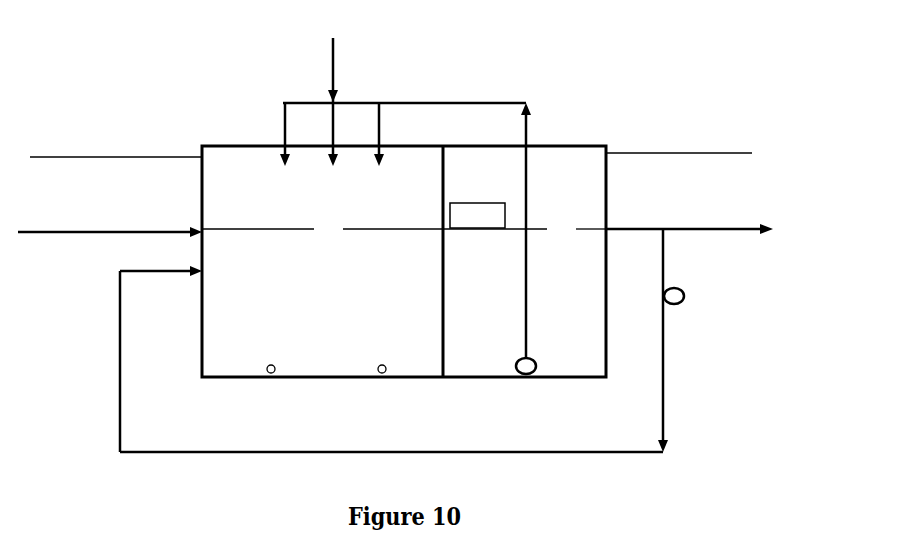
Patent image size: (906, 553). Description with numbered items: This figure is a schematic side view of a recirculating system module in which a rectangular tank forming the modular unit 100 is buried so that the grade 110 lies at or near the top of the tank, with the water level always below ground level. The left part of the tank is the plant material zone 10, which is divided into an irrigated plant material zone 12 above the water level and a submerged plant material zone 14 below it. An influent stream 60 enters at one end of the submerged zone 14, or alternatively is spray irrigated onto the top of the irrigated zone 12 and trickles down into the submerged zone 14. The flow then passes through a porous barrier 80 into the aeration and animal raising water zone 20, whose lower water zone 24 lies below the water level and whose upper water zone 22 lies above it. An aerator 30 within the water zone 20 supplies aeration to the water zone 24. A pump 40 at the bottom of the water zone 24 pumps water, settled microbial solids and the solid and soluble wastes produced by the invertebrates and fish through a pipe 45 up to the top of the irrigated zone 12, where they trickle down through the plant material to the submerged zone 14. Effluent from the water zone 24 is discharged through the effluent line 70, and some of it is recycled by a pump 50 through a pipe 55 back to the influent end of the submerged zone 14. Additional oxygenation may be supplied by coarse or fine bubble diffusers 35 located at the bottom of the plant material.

The modular unit 100 is at (212, 142).
The grade 110 is at (65, 157).
The porous barrier 80 is at (457, 261).
The irrigated plant material zone 12 is at (322, 188).
The submerged plant material zone 14 is at (322, 303).
The upper water zone 22 is at (524, 188).
The water zone 24 is at (524, 303).
The plant material zone 10 is at (322, 229).
The aeration and animal raising water zone 20 is at (524, 229).
The aerator 30 is at (477, 215).
The influent stream 60 is at (272, 138).
The pipe 45 is at (538, 230).
The pump 40 is at (542, 366).
The effluent line 70 is at (689, 241).
The pipe 55 is at (407, 340).
The pump 50 is at (690, 298).
The bubble diffusers 35 is at (378, 366).